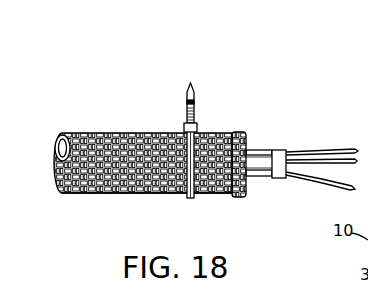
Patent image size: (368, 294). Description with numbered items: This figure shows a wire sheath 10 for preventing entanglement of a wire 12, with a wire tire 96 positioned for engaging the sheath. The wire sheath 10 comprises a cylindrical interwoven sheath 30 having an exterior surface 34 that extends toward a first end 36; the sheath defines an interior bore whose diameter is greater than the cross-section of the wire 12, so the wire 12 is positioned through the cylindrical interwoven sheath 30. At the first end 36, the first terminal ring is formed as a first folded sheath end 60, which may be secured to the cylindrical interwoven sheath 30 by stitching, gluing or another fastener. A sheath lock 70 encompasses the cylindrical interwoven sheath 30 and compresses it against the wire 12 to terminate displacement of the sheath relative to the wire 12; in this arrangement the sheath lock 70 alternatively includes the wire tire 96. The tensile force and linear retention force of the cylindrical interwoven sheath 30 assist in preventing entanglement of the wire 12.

The wire sheath 10 is at (121, 96).
The cylindrical interwoven sheath 30 is at (97, 133).
The exterior surface 34 is at (78, 195).
The first end 36 is at (224, 133).
The first folded sheath end 60 is at (245, 197).
The sheath lock 70 is at (191, 83).
The wire tire 96 is at (189, 172).
The wire 12 is at (263, 150).